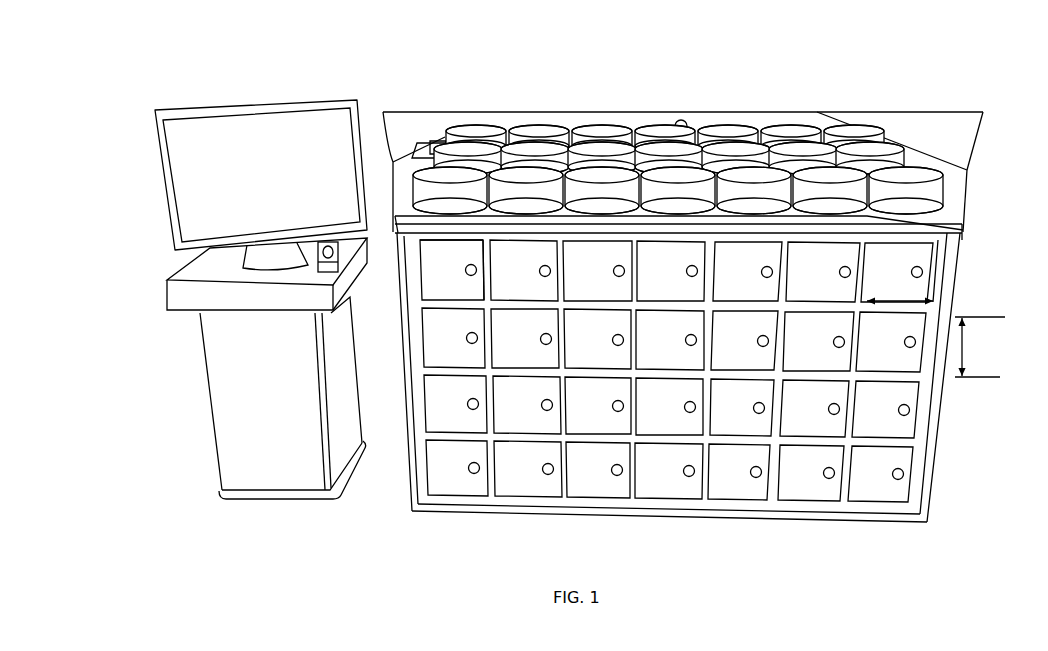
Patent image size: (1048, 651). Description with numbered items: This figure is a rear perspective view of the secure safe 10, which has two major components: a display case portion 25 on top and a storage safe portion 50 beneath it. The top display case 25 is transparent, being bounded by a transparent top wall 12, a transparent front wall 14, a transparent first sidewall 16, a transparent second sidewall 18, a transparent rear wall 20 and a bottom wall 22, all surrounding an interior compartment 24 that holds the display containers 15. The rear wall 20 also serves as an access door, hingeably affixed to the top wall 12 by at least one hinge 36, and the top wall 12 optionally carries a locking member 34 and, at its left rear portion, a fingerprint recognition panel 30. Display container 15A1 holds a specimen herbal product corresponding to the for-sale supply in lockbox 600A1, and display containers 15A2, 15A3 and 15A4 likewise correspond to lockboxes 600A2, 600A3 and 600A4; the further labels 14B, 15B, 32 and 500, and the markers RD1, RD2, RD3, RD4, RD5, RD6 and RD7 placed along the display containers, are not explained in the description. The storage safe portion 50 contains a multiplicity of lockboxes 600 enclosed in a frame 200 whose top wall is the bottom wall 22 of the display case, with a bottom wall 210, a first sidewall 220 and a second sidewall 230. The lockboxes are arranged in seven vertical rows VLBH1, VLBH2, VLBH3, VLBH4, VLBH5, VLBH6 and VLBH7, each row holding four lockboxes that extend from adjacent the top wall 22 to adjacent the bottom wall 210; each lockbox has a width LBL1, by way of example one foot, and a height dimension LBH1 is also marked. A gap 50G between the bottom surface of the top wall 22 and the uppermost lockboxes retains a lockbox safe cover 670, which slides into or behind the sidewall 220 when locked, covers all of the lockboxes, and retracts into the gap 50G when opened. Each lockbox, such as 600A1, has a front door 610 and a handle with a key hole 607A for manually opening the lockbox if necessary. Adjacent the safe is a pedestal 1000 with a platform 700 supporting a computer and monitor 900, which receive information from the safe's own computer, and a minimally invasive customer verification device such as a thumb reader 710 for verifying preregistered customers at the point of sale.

The secure safe 10 is at (690, 284).
The transparent top wall 12 is at (437, 140).
The transparent front wall 14 is at (760, 112).
The rear container 14B is at (852, 172).
The container 15 is at (515, 171).
The display container 15A1 is at (493, 129).
The display container 15A2 is at (473, 142).
The display container 15A3 is at (490, 160).
The display container 15A4 is at (458, 174).
The front container 15B is at (800, 200).
The transparent first sidewall 16 is at (973, 181).
The transparent second sidewall 18 is at (423, 133).
The transparent rear wall 20 is at (978, 133).
The bottom wall 22 is at (867, 218).
The interior compartment 24 is at (578, 142).
The display case portion 25 is at (921, 96).
The fingerprint recognition panel 30 is at (439, 108).
The container 32 is at (647, 125).
The locking member 34 is at (680, 119).
The hinge 36 is at (716, 125).
The storage safe portion 50 is at (682, 394).
The gap 50G is at (961, 240).
The frame 200 is at (410, 486).
The bottom wall 210 is at (424, 514).
The first sidewall 220 is at (933, 465).
The second sidewall 230 is at (410, 428).
The locker door 500 is at (426, 404).
The lockboxes 600 is at (450, 305).
The lockbox 600A1 is at (470, 261).
The lockbox 600A2 is at (480, 368).
The lockbox 600A3 is at (478, 396).
The lockbox 600A4 is at (480, 461).
The key hole 607A is at (472, 276).
The front door 610 is at (478, 290).
The lockbox safe cover 670 is at (442, 236).
The platform 700 is at (177, 276).
The thumb reader 710 is at (328, 241).
The computer and monitor 900 is at (248, 122).
The pedestal 1000 is at (244, 288).
The reagent dispenser column 1 RD1 is at (487, 85).
The reagent dispenser column 2 RD2 is at (555, 121).
The reagent dispenser column 3 RD3 is at (598, 122).
The reagent dispenser column 4 RD4 is at (664, 101).
The reagent dispenser column 5 RD5 is at (728, 109).
The reagent dispenser column 6 RD6 is at (780, 126).
The reagent dispenser column 7 RD7 is at (873, 127).
The vertical row of lockboxes VLBH1 is at (458, 489).
The vertical row of lockboxes VLBH2 is at (526, 485).
The vertical row of lockboxes VLBH3 is at (589, 487).
The vertical row of lockboxes VLBH4 is at (664, 489).
The vertical row of lockboxes VLBH5 is at (738, 490).
The vertical row of lockboxes VLBH6 is at (811, 492).
The vertical row of lockboxes VLBH7 is at (884, 494).
The lockbox width LBL1 is at (900, 291).
The locker box height LBH1 is at (980, 347).